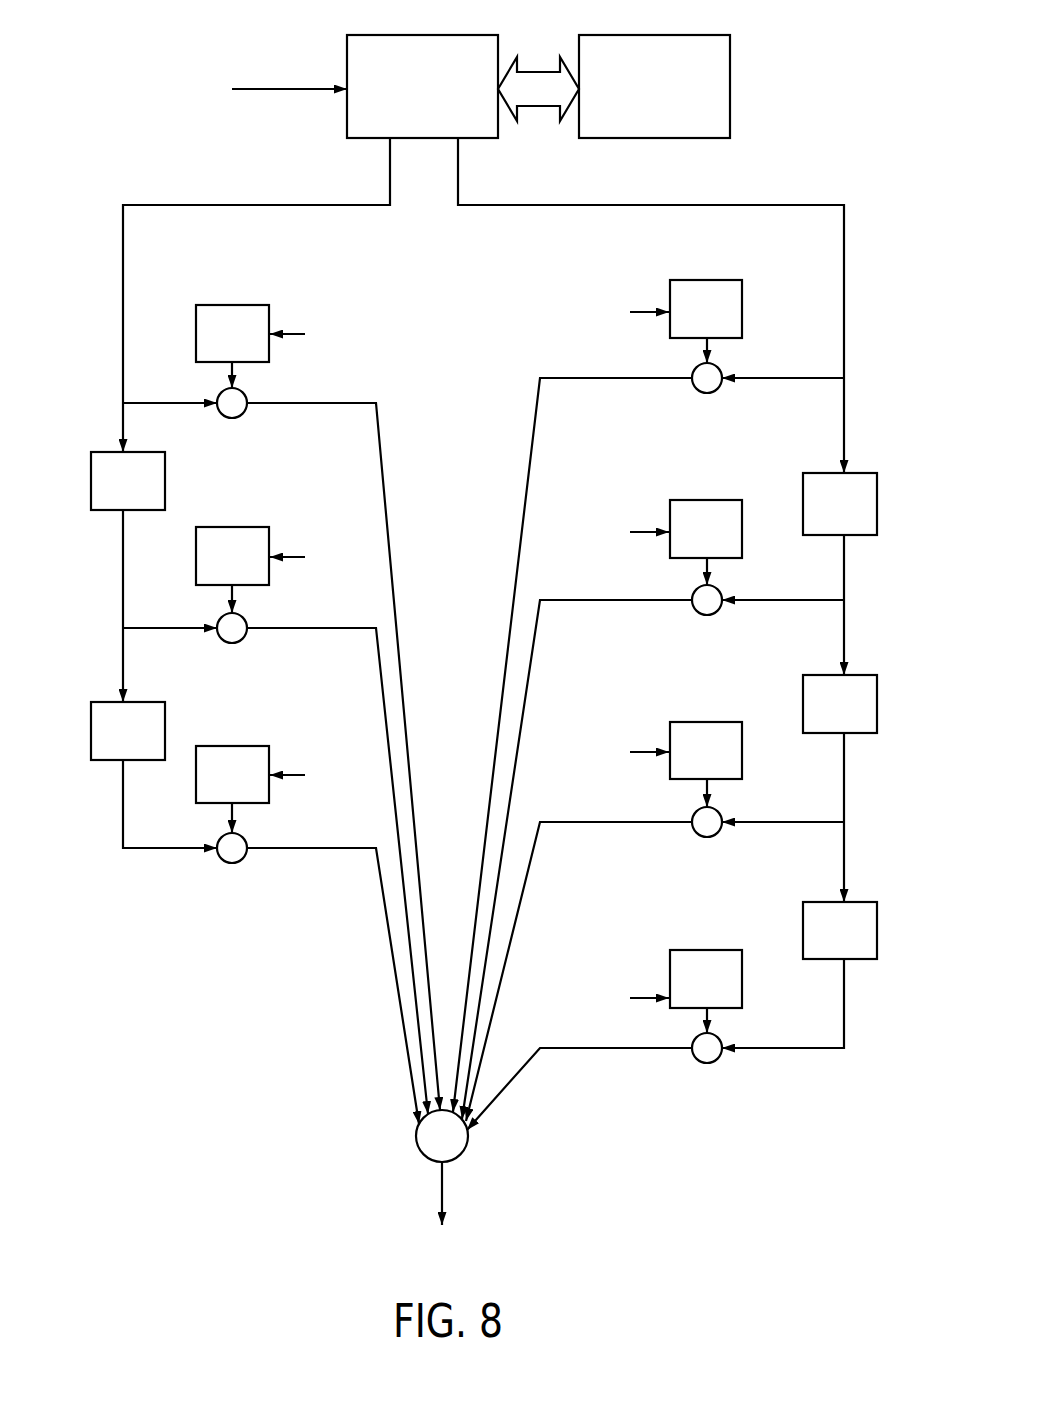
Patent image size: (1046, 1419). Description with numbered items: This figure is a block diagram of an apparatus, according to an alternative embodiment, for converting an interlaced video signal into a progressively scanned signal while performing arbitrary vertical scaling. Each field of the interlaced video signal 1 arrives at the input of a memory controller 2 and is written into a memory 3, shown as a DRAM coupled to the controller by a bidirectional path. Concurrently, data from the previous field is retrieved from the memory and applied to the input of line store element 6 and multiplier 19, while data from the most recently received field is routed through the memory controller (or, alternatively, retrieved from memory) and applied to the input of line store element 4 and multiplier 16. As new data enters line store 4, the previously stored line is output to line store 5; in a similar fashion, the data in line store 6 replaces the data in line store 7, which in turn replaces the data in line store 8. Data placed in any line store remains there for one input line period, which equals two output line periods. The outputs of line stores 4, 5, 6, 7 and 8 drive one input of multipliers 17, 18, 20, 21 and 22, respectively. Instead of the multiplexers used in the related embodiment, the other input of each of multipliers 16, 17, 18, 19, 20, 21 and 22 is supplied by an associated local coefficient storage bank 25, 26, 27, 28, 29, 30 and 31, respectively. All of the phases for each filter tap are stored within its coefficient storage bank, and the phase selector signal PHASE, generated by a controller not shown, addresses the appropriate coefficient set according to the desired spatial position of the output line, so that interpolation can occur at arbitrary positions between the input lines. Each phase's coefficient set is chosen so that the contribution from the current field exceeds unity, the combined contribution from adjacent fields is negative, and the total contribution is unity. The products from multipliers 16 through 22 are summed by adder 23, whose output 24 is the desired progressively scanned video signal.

The interlaced video signal 1 is at (268, 89).
The memory controller 2 is at (466, 35).
The memory 3 is at (700, 35).
The line store element 4 is at (91, 480).
The line store 5 is at (91, 729).
The line store element 6 is at (877, 500).
The line store 7 is at (877, 705).
The line store 8 is at (877, 930).
The multiplier 16 is at (234, 417).
The multiplier 17 is at (234, 642).
The multiplier 18 is at (234, 862).
The multiplier 19 is at (708, 392).
The multiplier 20 is at (708, 614).
The multiplier 21 is at (708, 836).
The multiplier 22 is at (708, 1062).
The adder 23 is at (450, 1160).
The output 24 is at (438, 1168).
The coefficient storage bank 25 is at (196, 336).
The coefficient storage bank 26 is at (196, 557).
The coefficient storage bank 27 is at (196, 775).
The coefficient storage bank 28 is at (742, 305).
The coefficient storage bank 29 is at (742, 525).
The coefficient storage bank 30 is at (742, 745).
The coefficient storage bank 31 is at (742, 970).